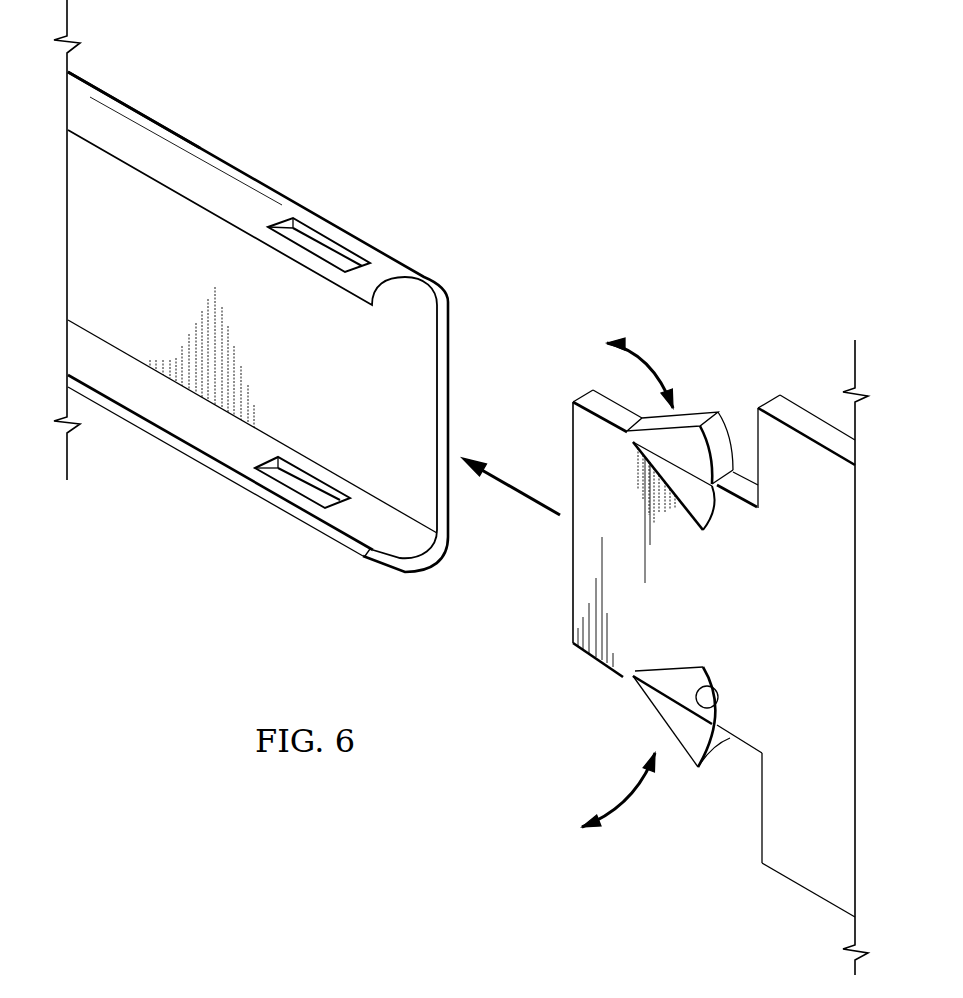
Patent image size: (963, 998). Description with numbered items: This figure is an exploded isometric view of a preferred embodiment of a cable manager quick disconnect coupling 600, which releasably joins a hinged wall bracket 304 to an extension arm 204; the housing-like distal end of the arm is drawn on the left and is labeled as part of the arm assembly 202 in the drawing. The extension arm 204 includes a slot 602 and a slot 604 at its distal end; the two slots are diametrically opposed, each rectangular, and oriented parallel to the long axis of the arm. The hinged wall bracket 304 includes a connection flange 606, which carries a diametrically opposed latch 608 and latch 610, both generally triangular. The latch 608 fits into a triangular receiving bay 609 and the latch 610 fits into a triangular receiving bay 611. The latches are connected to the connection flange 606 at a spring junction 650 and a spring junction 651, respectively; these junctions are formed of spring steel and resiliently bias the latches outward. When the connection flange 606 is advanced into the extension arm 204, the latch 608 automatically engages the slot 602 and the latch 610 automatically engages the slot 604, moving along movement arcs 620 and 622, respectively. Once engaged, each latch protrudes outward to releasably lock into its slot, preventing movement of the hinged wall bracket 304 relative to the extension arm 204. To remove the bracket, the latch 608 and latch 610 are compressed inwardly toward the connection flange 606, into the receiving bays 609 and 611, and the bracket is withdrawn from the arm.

The housing 202 is at (310, 96).
The extension arm 204 is at (165, 127).
The slot 602 is at (318, 248).
The slot 604 is at (298, 487).
The cable manager quick disconnect coupling 600 is at (640, 165).
The connection flange 606 is at (572, 614).
The hinged wall bracket 304 is at (802, 408).
The latch 608 is at (693, 420).
The triangular receiving bay 609 is at (700, 512).
The latch 610 is at (682, 760).
The triangular receiving bay 611 is at (717, 710).
The movement arc 620 is at (655, 363).
The movement arc 622 is at (630, 802).
The spring junction 650 is at (637, 395).
The spring junction 651 is at (616, 690).